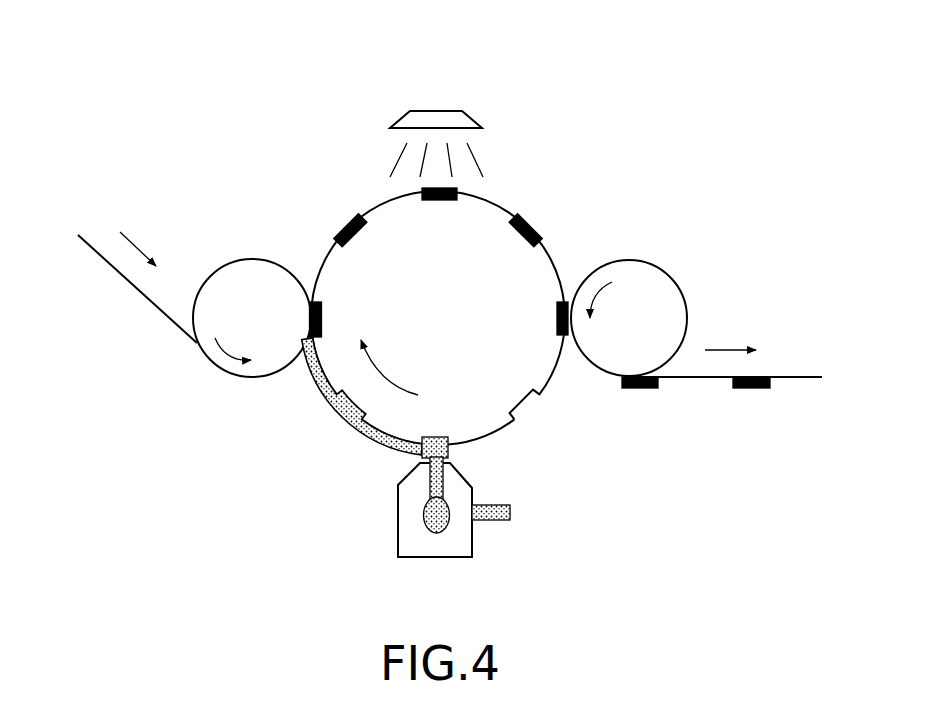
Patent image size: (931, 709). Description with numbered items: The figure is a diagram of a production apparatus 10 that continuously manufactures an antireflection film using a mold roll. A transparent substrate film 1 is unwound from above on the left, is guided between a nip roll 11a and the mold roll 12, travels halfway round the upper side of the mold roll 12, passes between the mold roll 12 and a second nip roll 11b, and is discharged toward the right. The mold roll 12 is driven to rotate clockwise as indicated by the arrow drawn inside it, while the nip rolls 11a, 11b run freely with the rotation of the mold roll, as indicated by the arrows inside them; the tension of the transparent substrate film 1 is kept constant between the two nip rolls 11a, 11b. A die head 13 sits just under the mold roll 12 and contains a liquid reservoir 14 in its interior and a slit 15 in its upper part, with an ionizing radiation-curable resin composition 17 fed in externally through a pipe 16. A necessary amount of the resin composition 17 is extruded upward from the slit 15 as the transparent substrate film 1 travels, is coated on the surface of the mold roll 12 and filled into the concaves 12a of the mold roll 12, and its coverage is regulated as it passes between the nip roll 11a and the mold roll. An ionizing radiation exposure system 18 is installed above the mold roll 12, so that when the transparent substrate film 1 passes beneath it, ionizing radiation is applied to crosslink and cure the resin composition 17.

The transparent substrate film 1 is at (137, 295).
The apparatus 10 is at (553, 205).
The nip roll 11a is at (248, 283).
The nip roll 11b is at (645, 280).
The mold roll 12 is at (487, 302).
The concaves 12a is at (338, 415).
The die head 13 is at (438, 548).
The liquid reservoir 14 is at (438, 523).
The slit 15 is at (442, 477).
The pipe 16 is at (510, 508).
The ionizing radiation-curable resin composition 17 is at (380, 443).
The ionizing radiation exposure system 18 is at (432, 108).